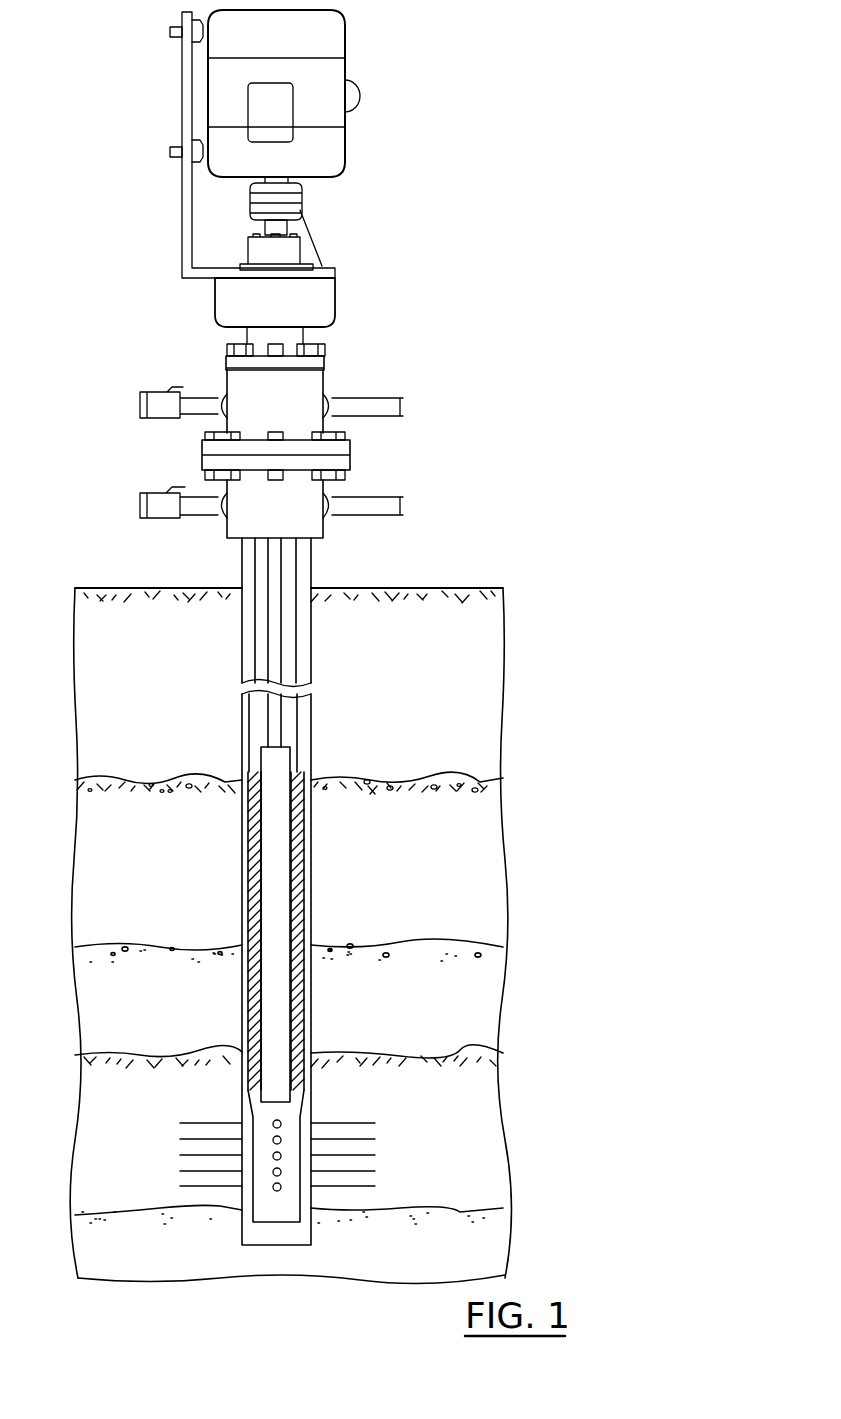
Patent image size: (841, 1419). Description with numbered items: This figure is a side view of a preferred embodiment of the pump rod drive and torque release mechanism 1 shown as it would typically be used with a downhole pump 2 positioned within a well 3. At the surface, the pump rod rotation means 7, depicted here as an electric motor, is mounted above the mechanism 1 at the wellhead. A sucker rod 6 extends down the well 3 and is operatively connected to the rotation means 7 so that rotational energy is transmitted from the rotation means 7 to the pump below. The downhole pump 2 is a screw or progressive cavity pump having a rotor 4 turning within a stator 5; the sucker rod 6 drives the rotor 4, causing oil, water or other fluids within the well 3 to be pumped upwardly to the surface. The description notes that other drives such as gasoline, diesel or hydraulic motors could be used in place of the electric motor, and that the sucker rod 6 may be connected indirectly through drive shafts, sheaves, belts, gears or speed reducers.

The pump rod drive and torque release mechanism 1 is at (323, 305).
The downhole pump 2 is at (297, 762).
The well 3 is at (313, 627).
The rotor 4 is at (280, 932).
The stator 5 is at (298, 882).
The sucker rod 6 is at (276, 720).
The pump rod rotation means 7 is at (330, 111).